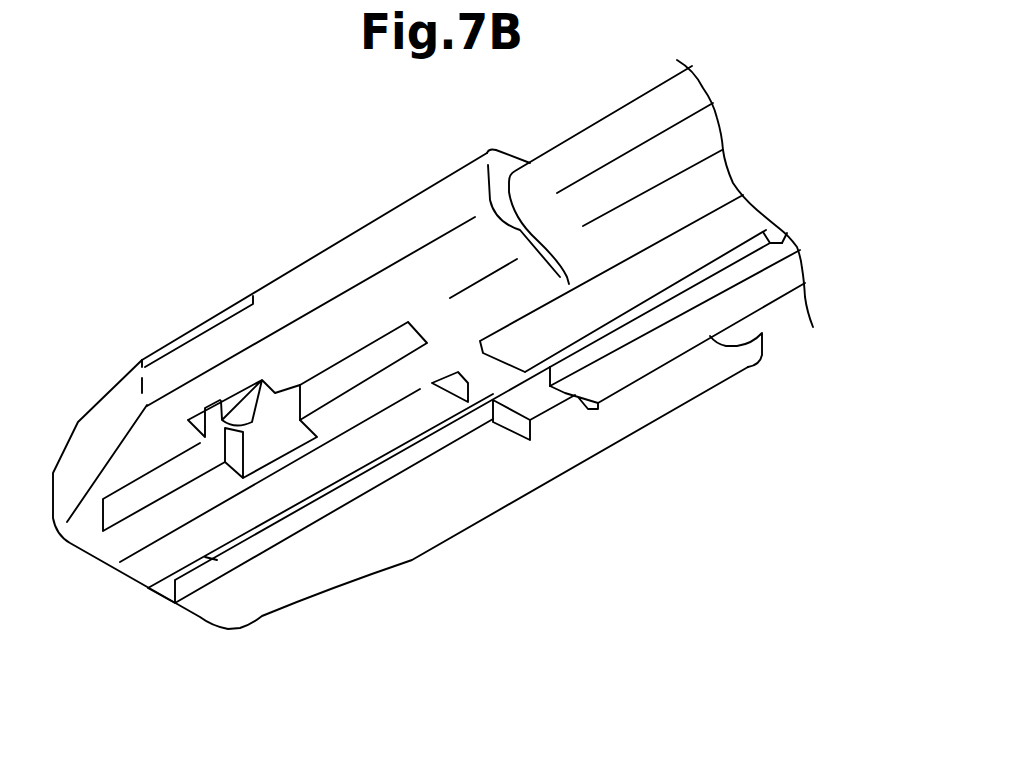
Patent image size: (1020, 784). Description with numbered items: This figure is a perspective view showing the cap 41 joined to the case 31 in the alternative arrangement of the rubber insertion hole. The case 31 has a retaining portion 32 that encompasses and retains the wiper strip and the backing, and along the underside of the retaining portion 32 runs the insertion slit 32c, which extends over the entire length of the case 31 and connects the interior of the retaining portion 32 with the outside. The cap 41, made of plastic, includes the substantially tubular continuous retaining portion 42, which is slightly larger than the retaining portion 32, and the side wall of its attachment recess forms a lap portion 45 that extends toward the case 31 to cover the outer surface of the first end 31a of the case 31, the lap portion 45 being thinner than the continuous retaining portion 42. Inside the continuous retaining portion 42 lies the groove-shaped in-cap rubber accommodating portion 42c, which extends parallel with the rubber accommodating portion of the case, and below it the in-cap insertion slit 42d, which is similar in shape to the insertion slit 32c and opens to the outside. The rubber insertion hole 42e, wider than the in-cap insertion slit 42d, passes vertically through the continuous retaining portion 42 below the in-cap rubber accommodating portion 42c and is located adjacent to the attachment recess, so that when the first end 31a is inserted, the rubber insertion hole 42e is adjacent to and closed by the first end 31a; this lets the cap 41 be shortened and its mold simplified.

The case 31 is at (620, 108).
The first end 31a is at (577, 397).
The retaining portion 32 is at (718, 168).
The insertion slit 32c is at (788, 239).
The cap 41 is at (113, 381).
The continuous retaining portion 42 is at (329, 251).
The in-cap rubber accommodating portion 42c is at (511, 403).
The in-cap insertion slit 42d is at (398, 471).
The rubber insertion hole 42e is at (478, 365).
The lap portion 45 is at (507, 238).